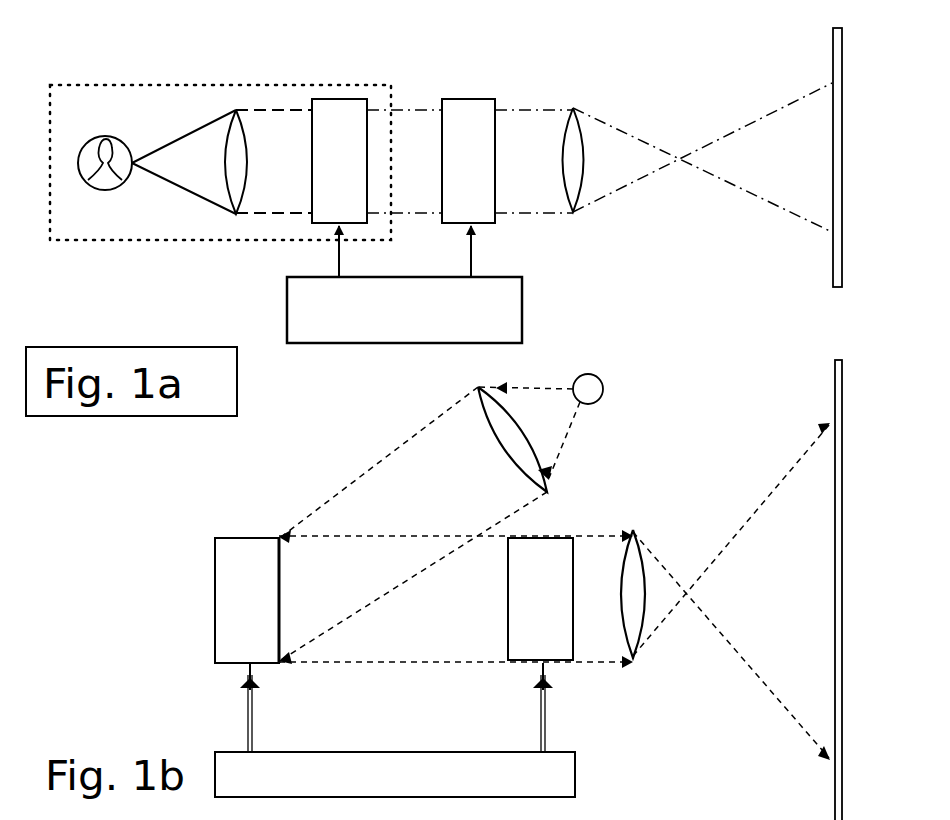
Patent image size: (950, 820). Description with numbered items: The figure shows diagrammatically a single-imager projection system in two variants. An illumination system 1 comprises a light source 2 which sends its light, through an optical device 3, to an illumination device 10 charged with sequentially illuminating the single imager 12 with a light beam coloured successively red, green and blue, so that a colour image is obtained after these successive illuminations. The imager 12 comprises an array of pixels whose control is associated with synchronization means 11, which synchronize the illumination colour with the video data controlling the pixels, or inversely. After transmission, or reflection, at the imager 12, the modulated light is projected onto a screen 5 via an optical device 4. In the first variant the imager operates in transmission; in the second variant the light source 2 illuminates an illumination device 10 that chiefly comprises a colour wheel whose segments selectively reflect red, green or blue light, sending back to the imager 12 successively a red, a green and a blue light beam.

In FIG. 1A, the illumination system 1 is at (157, 82).
In FIG. 1A, the light source 2 is at (103, 190).
In FIG. 1B, the light source 2 is at (600, 378).
In FIG. 1A, the optical device 3 is at (237, 165).
In FIG. 1B, the optical device 3 is at (480, 384).
In FIG. 1A, the optical device 4 is at (575, 165).
In FIG. 1B, the optical device 4 is at (634, 530).
In FIG. 1A, the screen 5 is at (832, 52).
In FIG. 1B, the screen 5 is at (837, 357).
In FIG. 1A, the illumination device 10 is at (339, 161).
In FIG. 1B, the illumination device 10 is at (247, 600).
In FIG. 1A, the synchronization means 11 is at (404, 284).
In FIG. 1B, the synchronization means 11 is at (395, 730).
In FIG. 1A, the imager 12 is at (468, 161).
In FIG. 1B, the imager 12 is at (540, 599).